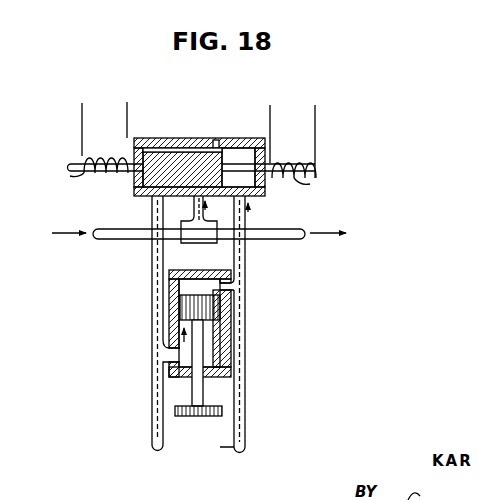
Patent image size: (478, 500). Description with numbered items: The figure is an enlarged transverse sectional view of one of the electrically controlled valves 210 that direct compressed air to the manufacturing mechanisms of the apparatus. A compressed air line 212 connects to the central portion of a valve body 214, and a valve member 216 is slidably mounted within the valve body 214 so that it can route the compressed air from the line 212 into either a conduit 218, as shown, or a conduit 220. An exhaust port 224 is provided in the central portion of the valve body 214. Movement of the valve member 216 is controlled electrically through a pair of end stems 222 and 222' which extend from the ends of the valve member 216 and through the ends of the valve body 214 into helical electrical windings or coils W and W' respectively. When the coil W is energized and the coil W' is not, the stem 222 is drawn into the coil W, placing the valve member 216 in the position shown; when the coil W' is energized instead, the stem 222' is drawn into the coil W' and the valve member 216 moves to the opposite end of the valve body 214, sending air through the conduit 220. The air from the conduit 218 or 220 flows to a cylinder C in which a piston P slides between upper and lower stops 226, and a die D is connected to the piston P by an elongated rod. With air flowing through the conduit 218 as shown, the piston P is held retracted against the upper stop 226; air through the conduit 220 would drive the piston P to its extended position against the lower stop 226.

The electrically controlled valve 210 is at (148, 136).
The valve body 214 is at (152, 138).
The exhaust port 224 is at (200, 138).
The valve member 216 is at (157, 172).
The end stem 222 is at (73, 159).
The end stem 222' is at (294, 145).
The helical electrical winding W is at (59, 181).
The helical electrical winding W' is at (318, 183).
The compressed air line 212 is at (118, 238).
The conduit 218 is at (156, 291).
The conduit 220 is at (246, 261).
The stop 226 is at (196, 267).
The piston P is at (206, 310).
The cylinder C is at (196, 334).
The die D is at (190, 412).